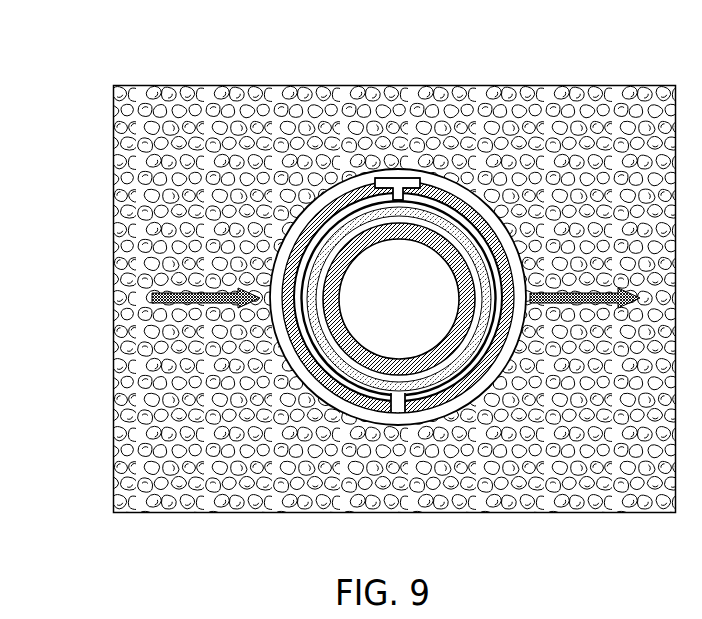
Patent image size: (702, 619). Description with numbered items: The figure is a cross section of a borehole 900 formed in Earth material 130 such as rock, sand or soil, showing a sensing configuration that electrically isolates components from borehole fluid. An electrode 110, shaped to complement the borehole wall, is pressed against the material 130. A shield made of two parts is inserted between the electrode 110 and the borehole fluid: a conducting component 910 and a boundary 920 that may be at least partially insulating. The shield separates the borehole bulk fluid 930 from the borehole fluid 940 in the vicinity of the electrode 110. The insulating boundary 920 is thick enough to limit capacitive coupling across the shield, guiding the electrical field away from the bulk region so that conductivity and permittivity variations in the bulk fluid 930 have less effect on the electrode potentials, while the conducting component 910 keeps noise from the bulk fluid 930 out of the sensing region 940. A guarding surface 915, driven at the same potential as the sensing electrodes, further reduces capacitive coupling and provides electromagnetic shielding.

The borehole 900 is at (102, 50).
The material 130 is at (215, 162).
The electrode 110 is at (470, 205).
The guarding surface 915 is at (380, 204).
The conducting component 910 is at (330, 328).
The boundary 920 is at (488, 303).
The borehole bulk fluid 930 is at (413, 328).
The borehole fluid in the vicinity of electrode 940 is at (397, 408).